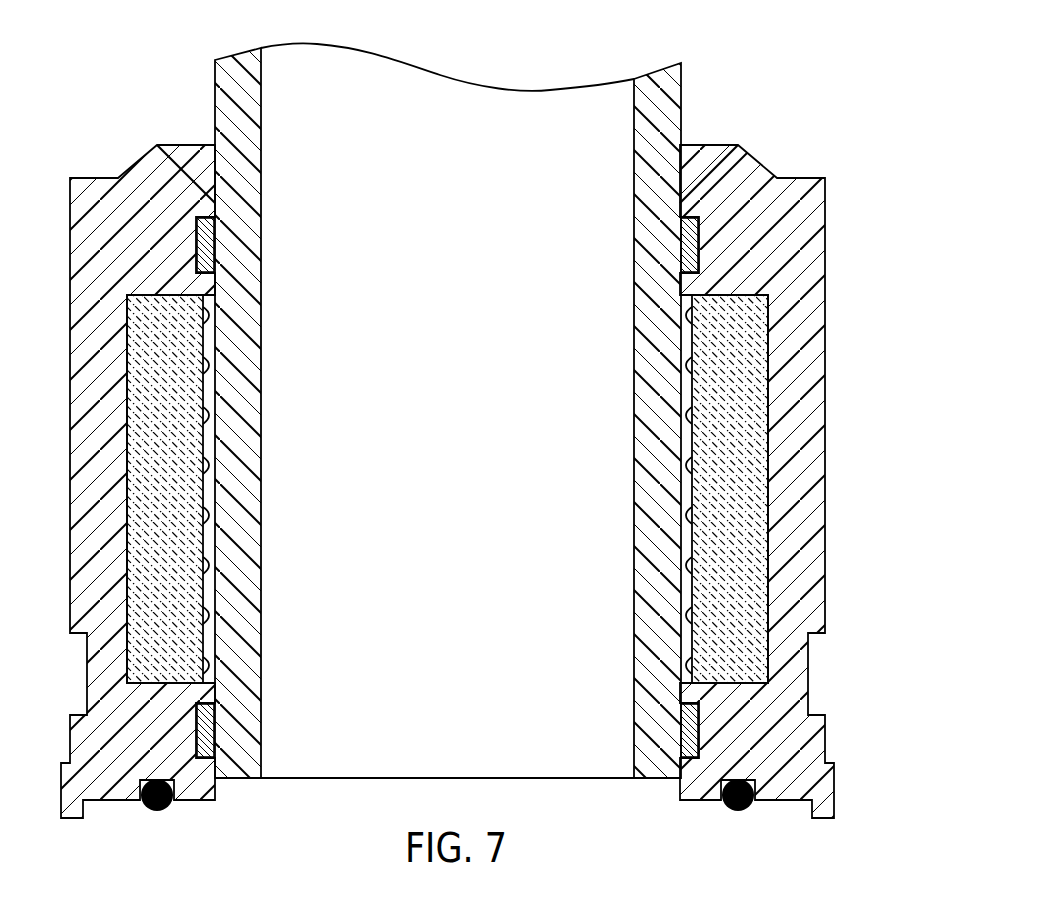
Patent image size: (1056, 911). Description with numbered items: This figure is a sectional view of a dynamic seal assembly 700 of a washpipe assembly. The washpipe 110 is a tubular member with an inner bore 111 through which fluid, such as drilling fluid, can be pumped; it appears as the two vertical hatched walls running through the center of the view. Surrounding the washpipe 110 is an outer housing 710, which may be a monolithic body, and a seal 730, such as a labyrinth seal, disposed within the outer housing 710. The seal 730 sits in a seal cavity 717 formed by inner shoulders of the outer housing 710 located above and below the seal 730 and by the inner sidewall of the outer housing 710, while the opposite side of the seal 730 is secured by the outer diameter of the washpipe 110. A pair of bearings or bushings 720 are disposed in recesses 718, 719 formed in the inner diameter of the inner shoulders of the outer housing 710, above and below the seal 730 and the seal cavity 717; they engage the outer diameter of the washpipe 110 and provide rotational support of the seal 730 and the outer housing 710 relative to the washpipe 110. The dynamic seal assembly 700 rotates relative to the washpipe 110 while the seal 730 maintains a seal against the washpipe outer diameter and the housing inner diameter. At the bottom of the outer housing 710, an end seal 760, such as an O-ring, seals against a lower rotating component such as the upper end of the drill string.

The dynamic seal assembly 700 is at (933, 102).
The washpipe 110 is at (681, 100).
The inner bore 111 is at (261, 72).
The outer housing 710 is at (826, 205).
The seal cavity 717 is at (748, 294).
The recess 718 is at (697, 216).
The recess 719 is at (684, 701).
The bearings or bushings 720 is at (690, 242).
The seal 730 is at (745, 435).
The end seal 760 is at (742, 812).